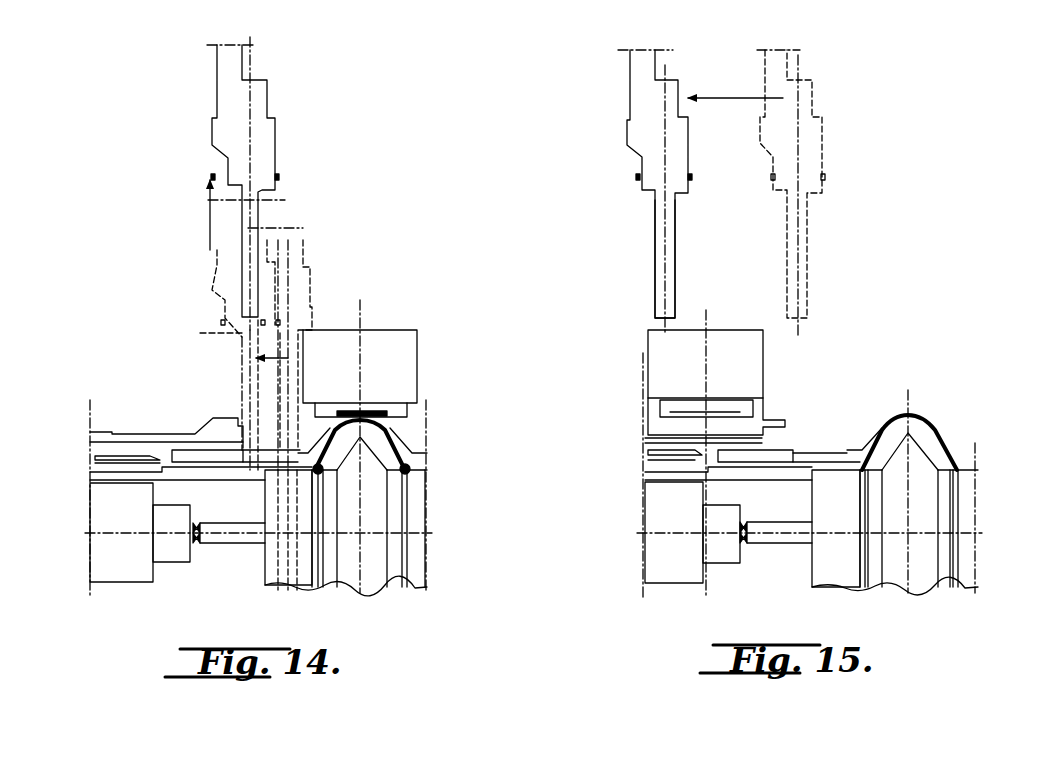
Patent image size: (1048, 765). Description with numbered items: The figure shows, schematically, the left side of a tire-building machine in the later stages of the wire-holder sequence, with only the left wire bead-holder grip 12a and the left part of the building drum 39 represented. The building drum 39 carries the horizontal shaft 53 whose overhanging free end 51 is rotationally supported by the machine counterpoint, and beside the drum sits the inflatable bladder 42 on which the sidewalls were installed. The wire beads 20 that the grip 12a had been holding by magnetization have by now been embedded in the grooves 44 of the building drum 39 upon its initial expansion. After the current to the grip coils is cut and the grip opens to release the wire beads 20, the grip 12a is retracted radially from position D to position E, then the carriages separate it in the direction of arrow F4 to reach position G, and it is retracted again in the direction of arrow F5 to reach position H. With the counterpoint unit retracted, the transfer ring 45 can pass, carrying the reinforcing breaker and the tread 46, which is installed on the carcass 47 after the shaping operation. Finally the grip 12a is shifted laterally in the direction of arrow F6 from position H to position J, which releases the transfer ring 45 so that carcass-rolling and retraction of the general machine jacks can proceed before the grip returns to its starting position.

In FIG. 14, the position H is at (217, 78).
In FIG. 15, the position H is at (813, 82).
In FIG. 15, the position J is at (638, 89).
In FIG. 14, the position G is at (223, 313).
In FIG. 14, the position E is at (312, 305).
In FIG. 14, the position D is at (287, 580).
In FIG. 14, the arrow F4 is at (272, 347).
In FIG. 14, the arrow F5 is at (192, 215).
In FIG. 15, the arrow F6 is at (735, 87).
In FIG. 15, the left wire bead-holder grip 12a is at (658, 265).
In FIG. 14, the wire beads 20 is at (318, 473).
In FIG. 14, the building drum 39 is at (373, 583).
In FIG. 14, the inflatable bladder 42 is at (195, 545).
In FIG. 15, the inflatable bladder 42 is at (743, 545).
In FIG. 14, the grooves 44 is at (315, 580).
In FIG. 14, the transfer ring 45 is at (403, 365).
In FIG. 15, the transfer ring 45 is at (753, 373).
In FIG. 14, the tread 46 is at (337, 417).
In FIG. 14, the carcass 47 is at (400, 447).
In FIG. 14, the overhanging free end 51 is at (197, 523).
In FIG. 15, the overhanging free end 51 is at (746, 522).
In FIG. 14, the horizontal shaft 53 is at (243, 542).
In FIG. 15, the horizontal shaft 53 is at (790, 542).